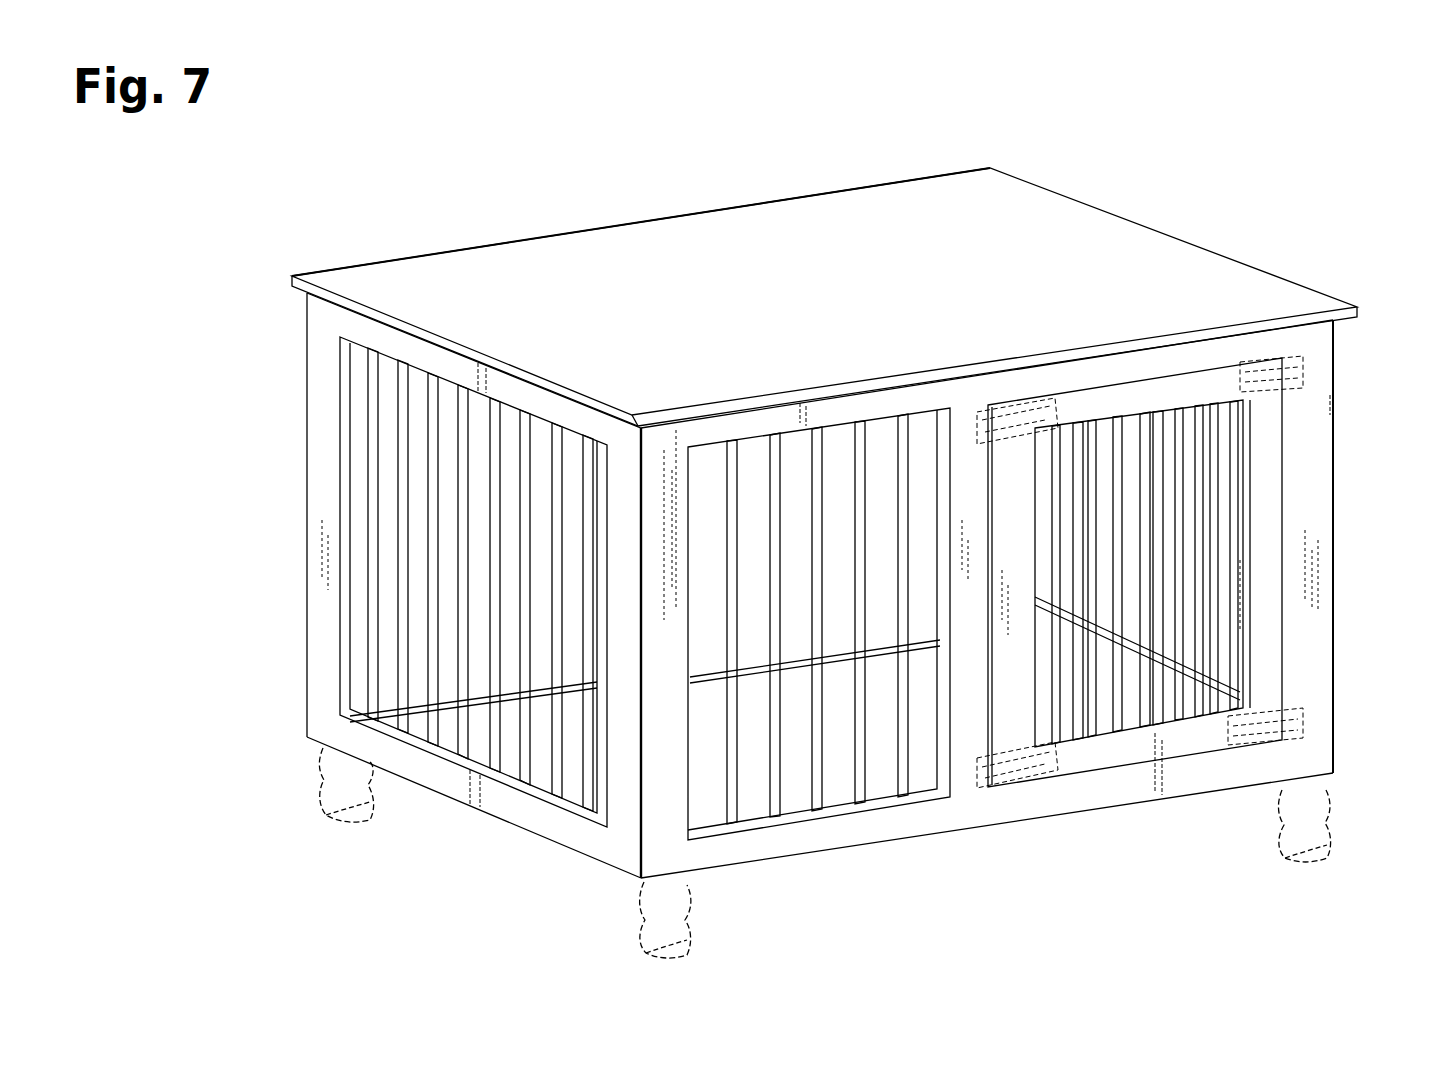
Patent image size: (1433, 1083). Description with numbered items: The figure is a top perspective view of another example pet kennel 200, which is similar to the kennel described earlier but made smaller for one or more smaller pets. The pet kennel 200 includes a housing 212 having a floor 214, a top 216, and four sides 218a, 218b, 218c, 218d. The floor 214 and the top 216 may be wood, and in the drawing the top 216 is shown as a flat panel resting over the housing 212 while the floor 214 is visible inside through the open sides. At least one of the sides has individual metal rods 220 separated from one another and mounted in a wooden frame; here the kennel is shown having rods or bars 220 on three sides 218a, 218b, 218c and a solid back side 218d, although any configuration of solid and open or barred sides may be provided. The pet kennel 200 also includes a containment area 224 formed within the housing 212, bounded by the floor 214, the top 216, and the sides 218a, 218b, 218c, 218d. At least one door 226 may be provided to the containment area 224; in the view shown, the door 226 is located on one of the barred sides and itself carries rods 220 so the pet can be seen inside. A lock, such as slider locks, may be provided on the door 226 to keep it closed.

The pet kennel 200 is at (1268, 182).
The housing 212 is at (713, 208).
The floor 214 is at (842, 758).
The top 216 is at (560, 277).
The side 218a is at (433, 790).
The side 218b is at (1057, 817).
The side 218c is at (1333, 562).
The back side 218d is at (763, 200).
The metal rods 220 is at (403, 560).
The containment area 224 is at (884, 732).
The door 226 is at (1177, 748).